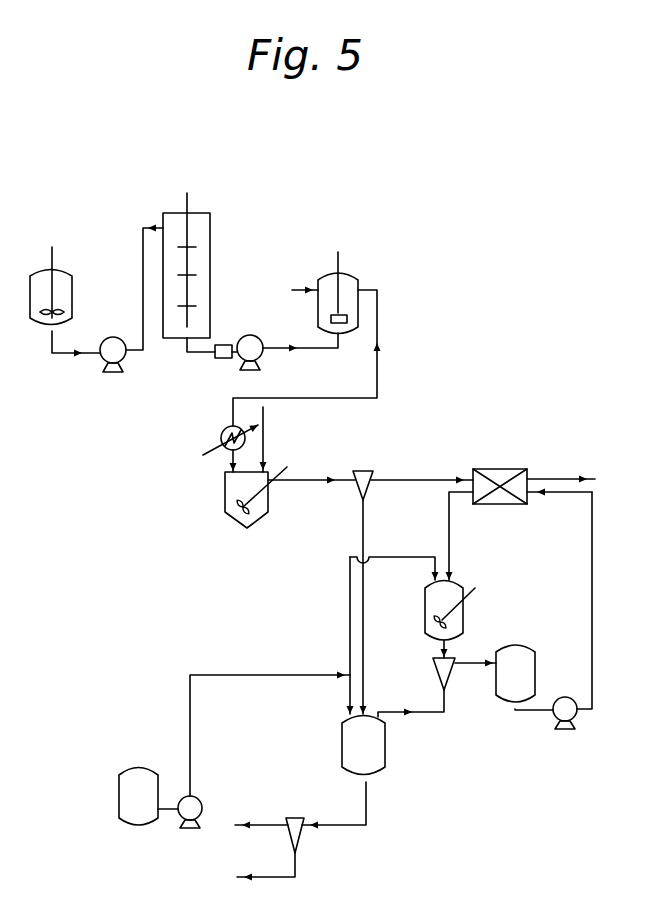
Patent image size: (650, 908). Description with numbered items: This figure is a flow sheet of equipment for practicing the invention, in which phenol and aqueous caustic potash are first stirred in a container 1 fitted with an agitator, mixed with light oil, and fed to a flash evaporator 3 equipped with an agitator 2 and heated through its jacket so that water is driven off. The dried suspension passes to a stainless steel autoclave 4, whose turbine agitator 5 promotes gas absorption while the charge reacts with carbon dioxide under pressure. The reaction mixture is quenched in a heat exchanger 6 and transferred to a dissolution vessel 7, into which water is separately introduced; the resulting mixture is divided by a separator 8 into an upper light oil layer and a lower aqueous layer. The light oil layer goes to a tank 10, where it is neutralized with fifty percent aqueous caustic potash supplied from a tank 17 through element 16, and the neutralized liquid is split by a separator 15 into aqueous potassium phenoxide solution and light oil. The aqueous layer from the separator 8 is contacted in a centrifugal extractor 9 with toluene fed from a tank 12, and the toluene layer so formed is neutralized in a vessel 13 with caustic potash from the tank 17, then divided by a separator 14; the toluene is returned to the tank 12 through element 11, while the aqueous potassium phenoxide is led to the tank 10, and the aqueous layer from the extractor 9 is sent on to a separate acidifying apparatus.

The mixing vessel 1 is at (60, 268).
The agitator 2 is at (188, 231).
The flash evaporator 3 is at (210, 273).
The autoclave 4 is at (350, 276).
The agitator 5 is at (335, 307).
The heat exchanger 6 is at (221, 436).
The dissolution vessel 7 is at (225, 498).
The separator 8 is at (365, 470).
The centrifugal extractor 9 is at (507, 469).
The tank 10 is at (385, 749).
The pump 11 is at (566, 730).
The tank 12 is at (535, 665).
The vessel 13 is at (463, 607).
The separator 14 is at (448, 680).
The separator 15 is at (306, 835).
The pump 16 is at (192, 830).
The tank 17 is at (119, 800).